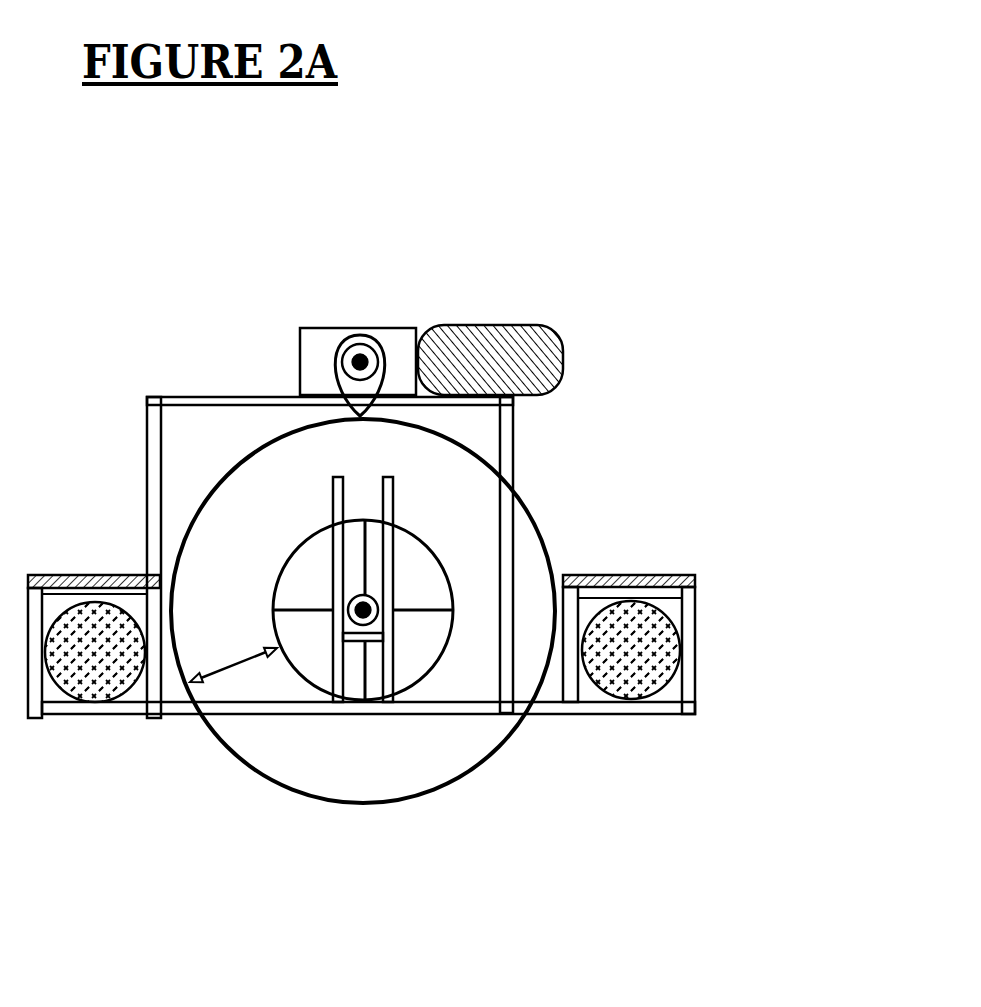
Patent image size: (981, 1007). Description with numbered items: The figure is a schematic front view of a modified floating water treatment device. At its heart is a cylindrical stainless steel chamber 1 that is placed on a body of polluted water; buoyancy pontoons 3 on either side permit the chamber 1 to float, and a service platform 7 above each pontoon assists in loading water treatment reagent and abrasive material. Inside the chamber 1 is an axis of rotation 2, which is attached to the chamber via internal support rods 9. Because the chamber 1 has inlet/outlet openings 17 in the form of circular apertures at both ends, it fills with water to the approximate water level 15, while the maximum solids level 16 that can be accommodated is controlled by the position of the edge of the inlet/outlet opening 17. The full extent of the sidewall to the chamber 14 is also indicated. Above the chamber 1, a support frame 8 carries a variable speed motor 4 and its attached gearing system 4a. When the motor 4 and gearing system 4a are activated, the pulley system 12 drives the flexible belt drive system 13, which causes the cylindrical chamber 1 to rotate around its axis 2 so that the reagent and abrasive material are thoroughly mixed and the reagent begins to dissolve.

The stainless steel chamber 1 is at (357, 783).
The axis of rotation of chamber 2 is at (352, 600).
The buoyancy pontoon 3 is at (122, 700).
The variable speed motor 4 is at (537, 324).
The gearing system 4a is at (305, 326).
The service platform 7 is at (110, 574).
The support frame for motor and gearing system 8 is at (253, 392).
The internal support rods for rotational axis 9 is at (370, 560).
The pulley system 12 is at (375, 345).
The flexible belt drive system 13 is at (352, 335).
The full extent of sidewall to chamber 14 is at (238, 668).
The approximate water level 15 is at (708, 612).
The maximum solids level in chamber 16 is at (708, 703).
The inlet/outlet opening 17 is at (410, 668).